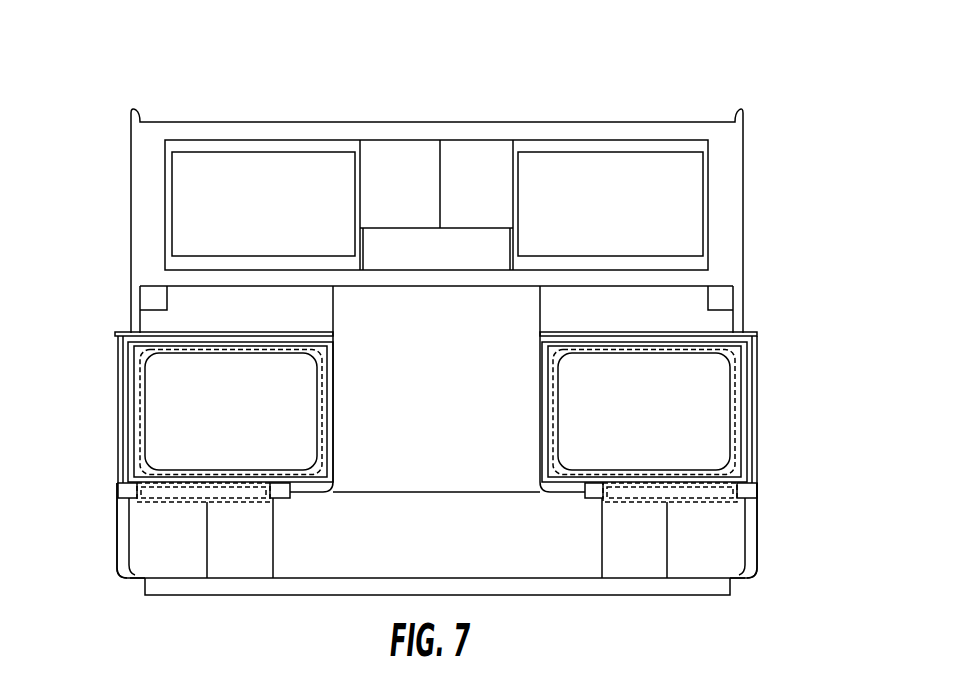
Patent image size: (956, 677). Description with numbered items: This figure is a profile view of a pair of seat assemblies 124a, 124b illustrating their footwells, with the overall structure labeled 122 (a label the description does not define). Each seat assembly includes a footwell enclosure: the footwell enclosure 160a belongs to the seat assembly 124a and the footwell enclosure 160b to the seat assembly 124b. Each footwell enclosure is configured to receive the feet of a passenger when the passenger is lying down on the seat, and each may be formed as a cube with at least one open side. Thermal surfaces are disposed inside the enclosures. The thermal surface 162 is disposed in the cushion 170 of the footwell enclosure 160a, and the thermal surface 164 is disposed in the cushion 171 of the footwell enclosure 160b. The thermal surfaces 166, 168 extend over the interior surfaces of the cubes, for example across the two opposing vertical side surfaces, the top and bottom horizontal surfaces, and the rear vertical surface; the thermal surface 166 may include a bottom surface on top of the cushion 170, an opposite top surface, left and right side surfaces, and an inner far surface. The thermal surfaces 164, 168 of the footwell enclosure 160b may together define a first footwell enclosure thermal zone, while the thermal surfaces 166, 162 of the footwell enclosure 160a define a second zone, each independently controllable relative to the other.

The seat back assembly 122 is at (680, 87).
The footwell enclosure 160a is at (735, 353).
The footwell enclosure 160b is at (140, 353).
The thermal surface 162 is at (733, 483).
The thermal surface 164 is at (142, 483).
The thermal surface 166 is at (731, 418).
The thermal surface 168 is at (140, 418).
The cushion 170 is at (712, 492).
The cushion 171 is at (153, 492).
The seat assembly 124a is at (775, 560).
The seat assembly 124b is at (90, 560).